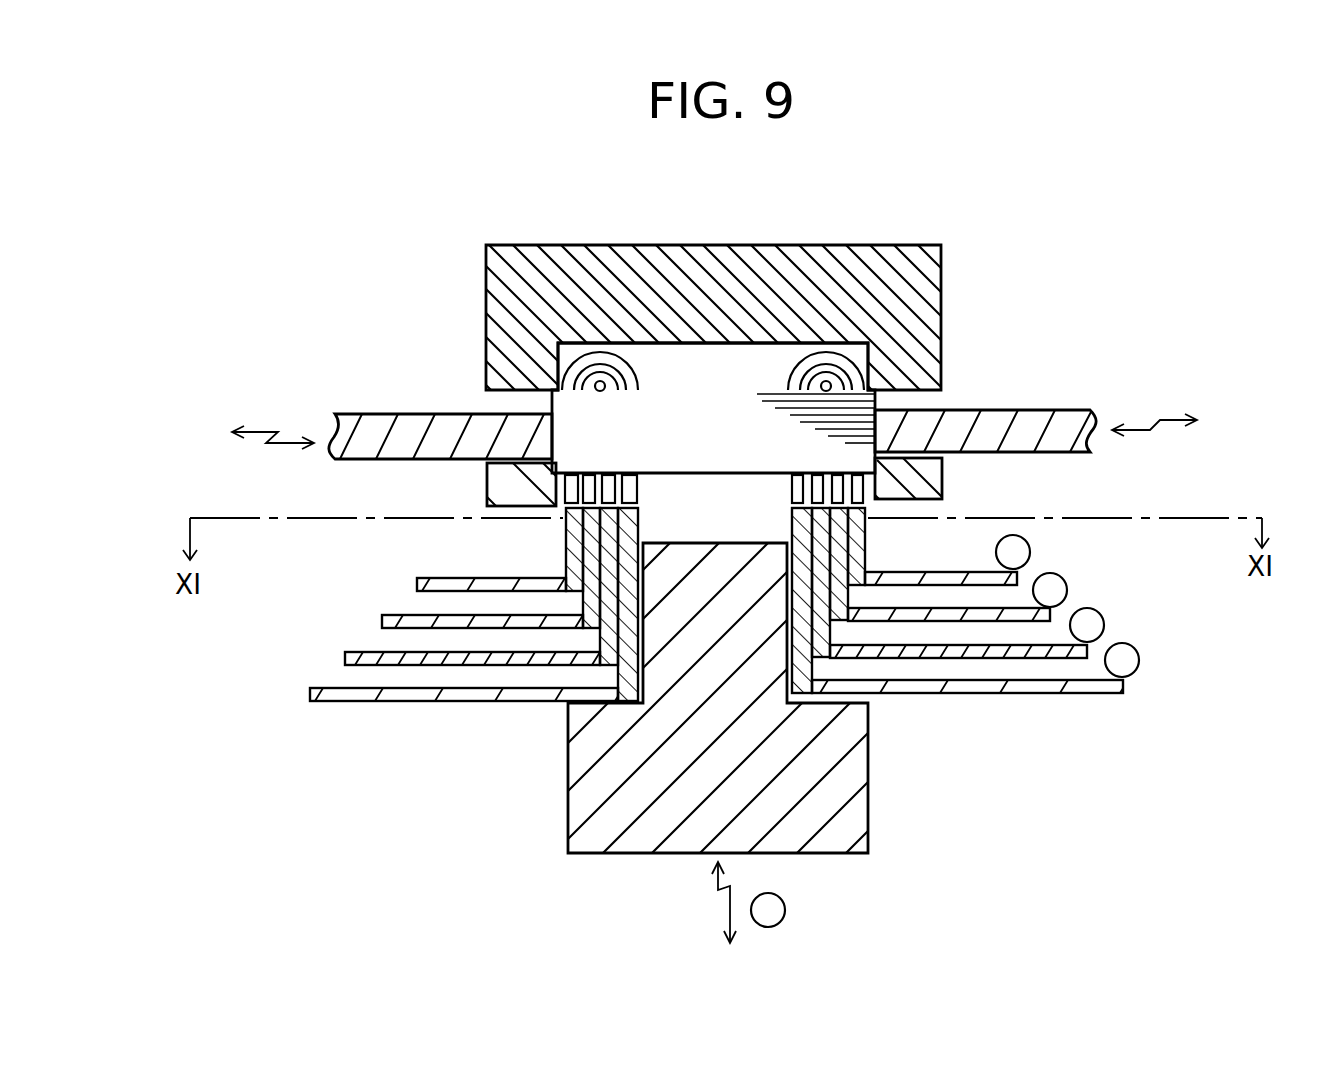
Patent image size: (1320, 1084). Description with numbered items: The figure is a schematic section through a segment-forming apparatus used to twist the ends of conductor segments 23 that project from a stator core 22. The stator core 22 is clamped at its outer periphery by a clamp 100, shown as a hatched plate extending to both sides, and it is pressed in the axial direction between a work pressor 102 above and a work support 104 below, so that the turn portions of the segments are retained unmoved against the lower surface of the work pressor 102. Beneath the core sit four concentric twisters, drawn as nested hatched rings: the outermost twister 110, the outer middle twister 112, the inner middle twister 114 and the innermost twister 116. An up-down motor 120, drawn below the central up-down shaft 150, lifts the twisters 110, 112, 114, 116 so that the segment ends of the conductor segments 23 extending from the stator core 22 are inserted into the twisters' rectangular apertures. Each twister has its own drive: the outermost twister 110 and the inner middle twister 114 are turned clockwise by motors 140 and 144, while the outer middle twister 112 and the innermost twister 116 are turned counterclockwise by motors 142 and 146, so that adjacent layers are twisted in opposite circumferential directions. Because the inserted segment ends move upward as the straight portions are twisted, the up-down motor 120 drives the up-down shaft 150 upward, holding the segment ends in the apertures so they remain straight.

The stator core 22 is at (880, 394).
The conductor segments 23 is at (553, 335).
The clamp 100 is at (1062, 413).
The work pressor 102 is at (926, 283).
The work support 104 is at (933, 477).
The outermost twister 110 is at (575, 548).
The outer middle twister 112 is at (583, 598).
The inner middle twister 114 is at (600, 633).
The innermost twister 116 is at (620, 675).
The up-down motor 120 is at (785, 910).
The motor 140 is at (1030, 549).
The motor 142 is at (1067, 587).
The motor 144 is at (1105, 617).
The motor 146 is at (1140, 652).
The up-down shaft 150 is at (858, 757).